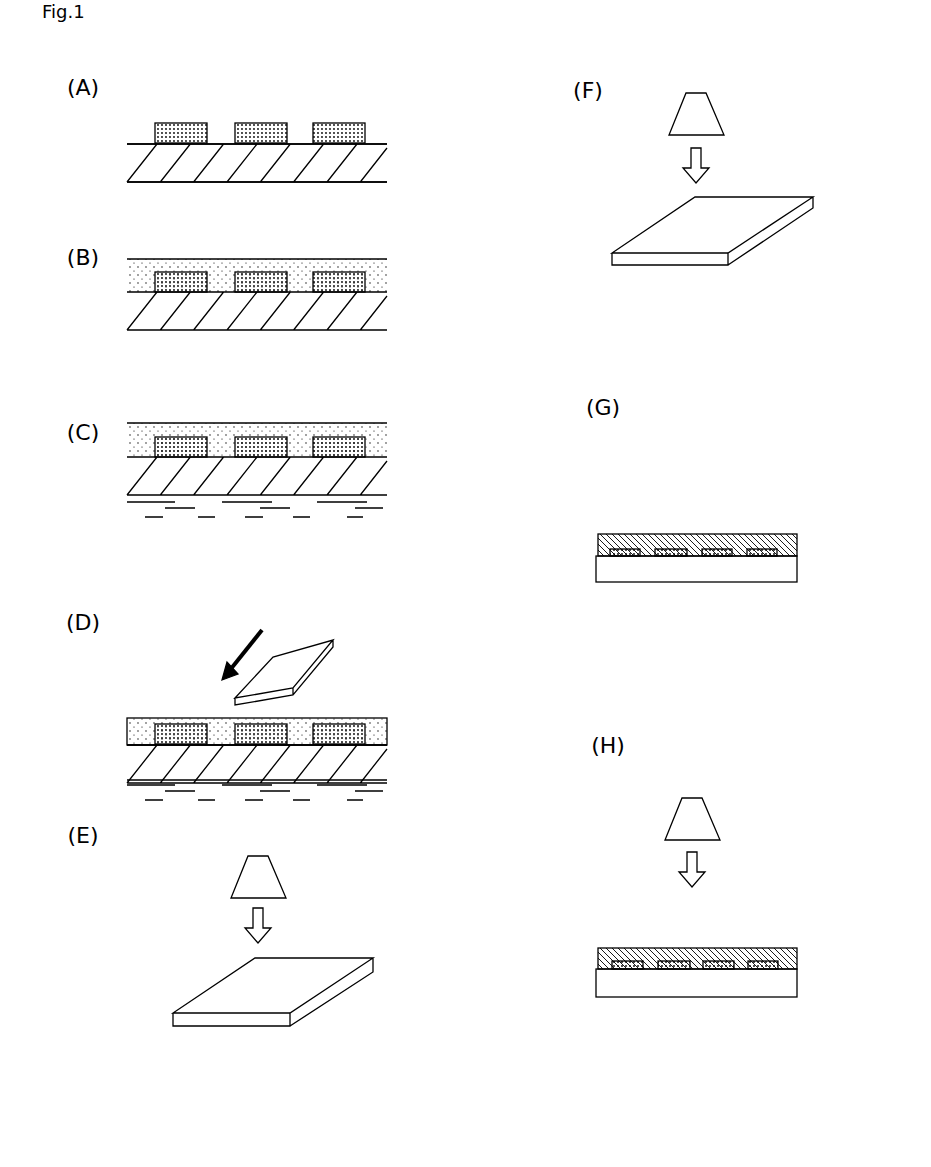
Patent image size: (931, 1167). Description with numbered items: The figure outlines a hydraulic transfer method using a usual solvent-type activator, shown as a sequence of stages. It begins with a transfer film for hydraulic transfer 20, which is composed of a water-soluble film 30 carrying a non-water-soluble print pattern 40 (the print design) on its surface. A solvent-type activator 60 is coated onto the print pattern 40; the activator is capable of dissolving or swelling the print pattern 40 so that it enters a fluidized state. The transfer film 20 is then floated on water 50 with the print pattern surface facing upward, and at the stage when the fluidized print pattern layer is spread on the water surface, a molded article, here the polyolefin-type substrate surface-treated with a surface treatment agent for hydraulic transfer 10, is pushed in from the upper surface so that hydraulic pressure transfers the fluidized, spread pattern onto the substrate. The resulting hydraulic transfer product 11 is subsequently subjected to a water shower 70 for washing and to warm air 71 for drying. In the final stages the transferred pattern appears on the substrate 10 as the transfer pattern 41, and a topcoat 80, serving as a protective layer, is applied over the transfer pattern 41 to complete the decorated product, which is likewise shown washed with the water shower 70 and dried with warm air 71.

The polyolefin-type substrate surface-treated with a surface treatment agent for hyd 10 is at (332, 655).
The hydraulic transfer product 11 is at (323, 1000).
The transfer film for hydraulic transfer 20 is at (382, 126).
The water-soluble film 30 is at (385, 167).
The print pattern 40 is at (258, 123).
The transfer pattern 41 is at (723, 543).
The water 50 is at (380, 517).
The solvent-type activator 60 is at (388, 278).
The water shower 70 is at (290, 918).
The warm air 71 is at (727, 158).
The topcoat (protective layer) 80 is at (675, 543).